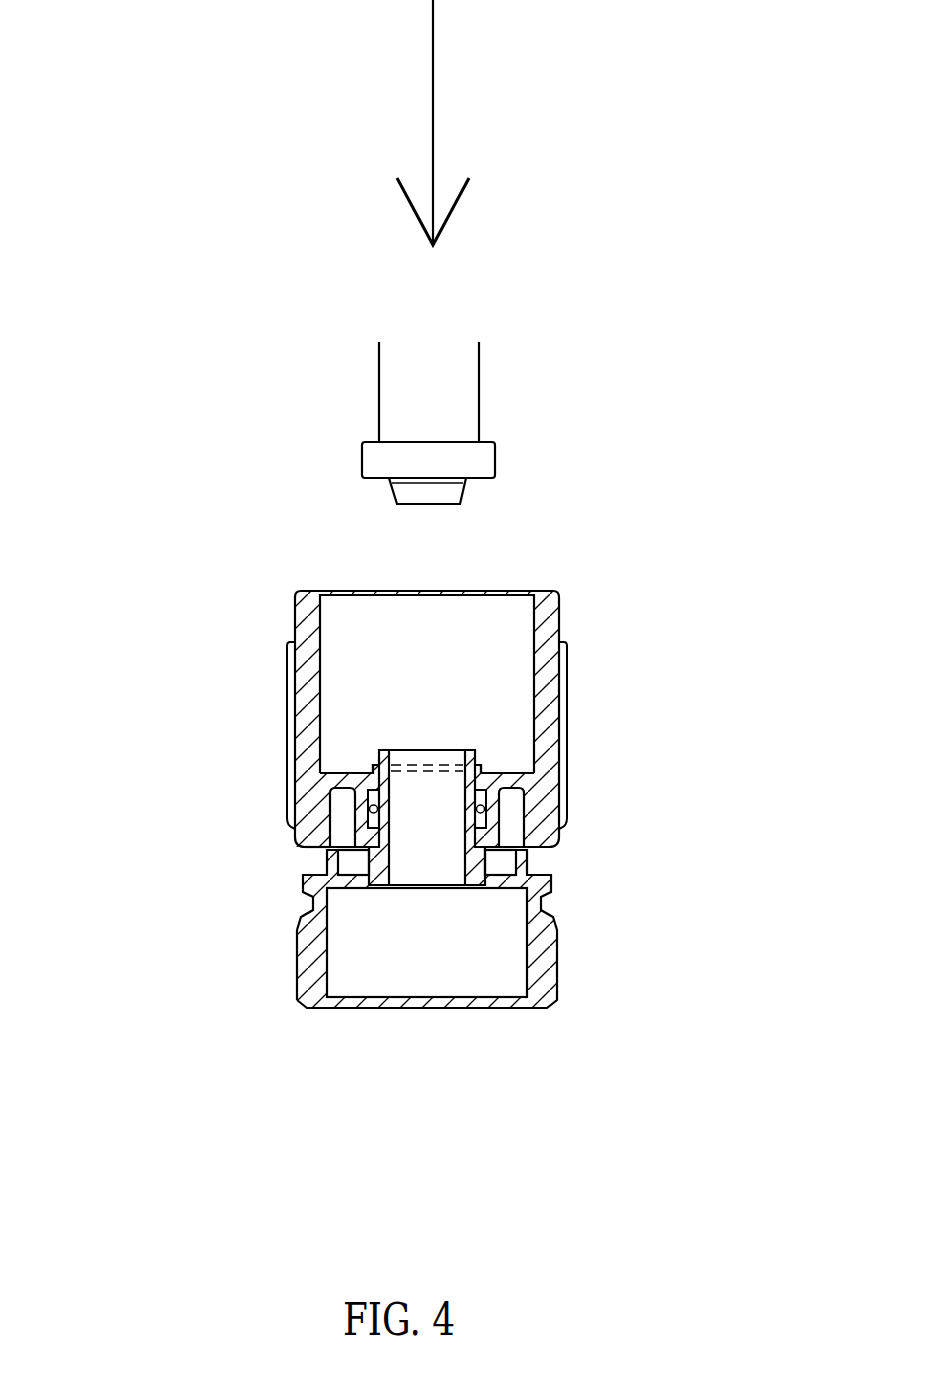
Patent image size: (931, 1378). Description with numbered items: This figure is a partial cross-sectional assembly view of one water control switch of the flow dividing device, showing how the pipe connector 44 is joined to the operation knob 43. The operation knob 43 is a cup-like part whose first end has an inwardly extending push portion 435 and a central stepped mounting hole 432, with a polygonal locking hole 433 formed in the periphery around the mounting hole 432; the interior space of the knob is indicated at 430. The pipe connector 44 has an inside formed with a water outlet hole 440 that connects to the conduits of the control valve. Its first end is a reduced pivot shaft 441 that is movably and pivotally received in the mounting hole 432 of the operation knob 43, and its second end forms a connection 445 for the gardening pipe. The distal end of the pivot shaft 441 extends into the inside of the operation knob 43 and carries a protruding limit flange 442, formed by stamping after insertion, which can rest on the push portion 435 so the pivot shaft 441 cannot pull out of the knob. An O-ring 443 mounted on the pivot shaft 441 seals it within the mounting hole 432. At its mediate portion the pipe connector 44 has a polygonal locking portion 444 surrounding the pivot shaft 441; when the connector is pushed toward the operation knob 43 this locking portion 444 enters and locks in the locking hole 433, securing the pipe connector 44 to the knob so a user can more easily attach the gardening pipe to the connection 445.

The operation knob 43 is at (287, 682).
The receiving cavity 430 is at (320, 642).
The stepped mounting hole 432 is at (348, 774).
The polygonal locking hole 433 is at (520, 817).
The push portion 435 is at (320, 773).
The pipe connector 44 is at (559, 945).
The water outlet hole 440 is at (430, 750).
The pivot shaft 441 is at (352, 828).
The limit flange 442 is at (485, 767).
The O-ring 443 is at (366, 810).
The polygonal locking portion 444 is at (520, 857).
The connection 445 is at (298, 957).